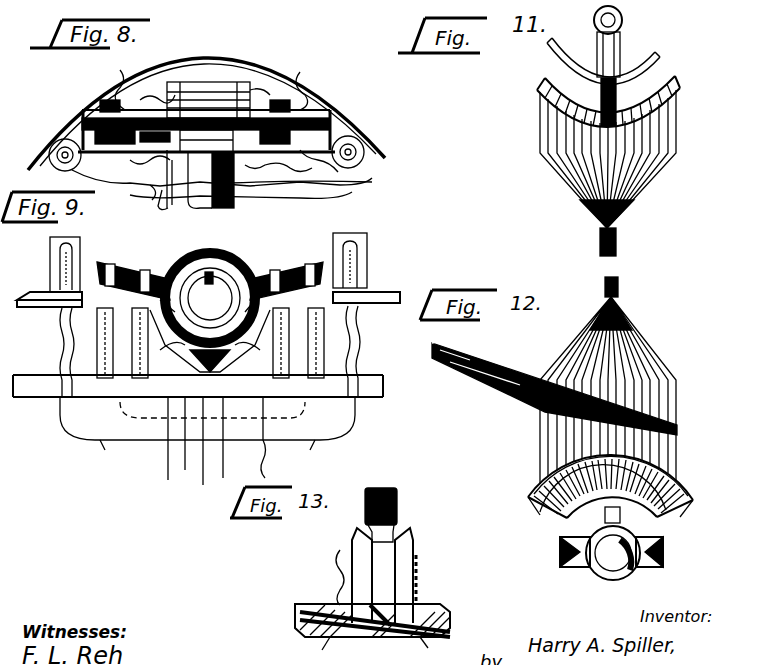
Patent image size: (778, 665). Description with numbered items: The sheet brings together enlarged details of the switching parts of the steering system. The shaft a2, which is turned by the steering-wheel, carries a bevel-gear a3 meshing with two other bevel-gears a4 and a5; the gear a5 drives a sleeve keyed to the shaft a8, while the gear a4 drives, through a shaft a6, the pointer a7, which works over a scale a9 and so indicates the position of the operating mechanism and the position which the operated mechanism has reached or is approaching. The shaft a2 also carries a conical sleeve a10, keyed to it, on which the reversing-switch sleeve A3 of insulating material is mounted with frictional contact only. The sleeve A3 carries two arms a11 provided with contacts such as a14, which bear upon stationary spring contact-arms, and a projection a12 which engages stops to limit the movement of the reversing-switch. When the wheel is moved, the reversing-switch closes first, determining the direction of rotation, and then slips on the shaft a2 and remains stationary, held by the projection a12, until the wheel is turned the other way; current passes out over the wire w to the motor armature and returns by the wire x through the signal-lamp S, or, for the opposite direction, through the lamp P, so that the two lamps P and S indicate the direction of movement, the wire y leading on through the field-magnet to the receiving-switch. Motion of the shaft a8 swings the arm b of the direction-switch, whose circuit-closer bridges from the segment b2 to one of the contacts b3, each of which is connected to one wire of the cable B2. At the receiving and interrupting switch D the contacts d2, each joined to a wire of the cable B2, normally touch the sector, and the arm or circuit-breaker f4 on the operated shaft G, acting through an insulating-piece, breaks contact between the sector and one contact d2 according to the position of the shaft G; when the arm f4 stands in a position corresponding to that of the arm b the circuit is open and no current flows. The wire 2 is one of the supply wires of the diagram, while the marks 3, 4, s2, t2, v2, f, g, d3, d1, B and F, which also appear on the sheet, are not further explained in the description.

In FIG. 8, the shaft a2 is at (234, 196).
In FIG. 13, the shaft a2 is at (352, 542).
In FIG. 8, the bevel-gear a3 is at (132, 118).
In FIG. 9, the bevel-gear a3 is at (210, 298).
In FIG. 9, the reversing-switch sleeve A3 is at (205, 272).
In FIG. 8, the bevel-gear a4 is at (149, 163).
In FIG. 9, the bevel-gear a4 is at (167, 348).
In FIG. 9, the bevel-gear a5 is at (248, 348).
In FIG. 8, the shaft a6 is at (82, 112).
In FIG. 9, the shaft a6 is at (210, 343).
In FIG. 8, the pointer a7 is at (332, 112).
In FIG. 9, the pointer a7 is at (315, 262).
In FIG. 9, the shaft a8 is at (226, 278).
In FIG. 11, the shaft a8 is at (622, 20).
In FIG. 8, the scale a9 is at (76, 156).
In FIG. 9, the scale a9 is at (214, 252).
In FIG. 8, the sleeve a10 is at (278, 171).
In FIG. 9, the sleeve a10 is at (210, 274).
In FIG. 8, the arm a11 is at (319, 163).
In FIG. 9, the arm a11 is at (245, 262).
In FIG. 9, the projection a12 is at (198, 386).
In FIG. 13, the projection a12 is at (414, 540).
In FIG. 9, the contact a14 is at (260, 252).
In FIG. 13, the contact a14 is at (398, 510).
In FIG. 8, the wire s2 is at (145, 83).
In FIG. 8, the wire t2 is at (279, 83).
In FIG. 8, the wire x is at (171, 184).
In FIG. 9, the wire x is at (220, 484).
In FIG. 8, the wire y is at (305, 183).
In FIG. 8, the wire v2 is at (150, 197).
In FIG. 9, the signal-lamp S is at (49, 272).
In FIG. 9, the lamp P is at (366, 268).
In FIG. 9, the wire 2 is at (207, 419).
In FIG. 9, the lead 3² 3 is at (130, 422).
In FIG. 13, the lead 3² 3 is at (436, 645).
In FIG. 9, the lead 4² 4 is at (210, 379).
In FIG. 13, the lead 4² 4 is at (372, 631).
In FIG. 9, the wire f is at (213, 445).
In FIG. 9, the wire w is at (272, 464).
In FIG. 9, the wire g is at (200, 486).
In FIG. 11, the arm b is at (621, 50).
In FIG. 11, the segment b2 is at (614, 61).
In FIG. 11, the contacts b3 is at (682, 86).
In FIG. 11, the arc segment d3 is at (562, 92).
In FIG. 11, the segmented arc B is at (608, 101).
In FIG. 11, the cable B2 is at (680, 160).
In FIG. 12, the cable B2 is at (610, 380).
In FIG. 12, the receiving-switch D is at (695, 478).
In FIG. 12, the arc end d1 is at (691, 510).
In FIG. 12, the contacts d2 is at (531, 511).
In FIG. 12, the arm or circuit-breaker f4 is at (575, 525).
In FIG. 12, the bracket F is at (665, 550).
In FIG. 12, the shaft or operated body G is at (613, 543).